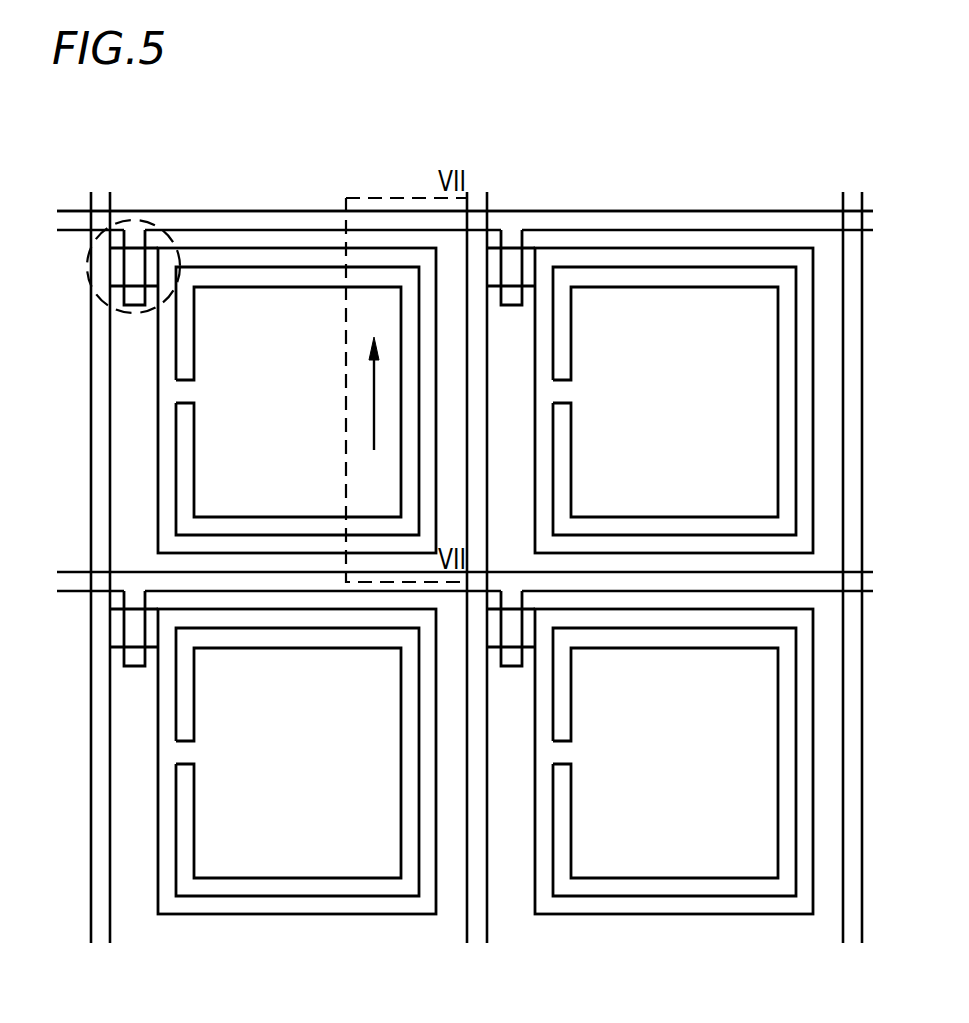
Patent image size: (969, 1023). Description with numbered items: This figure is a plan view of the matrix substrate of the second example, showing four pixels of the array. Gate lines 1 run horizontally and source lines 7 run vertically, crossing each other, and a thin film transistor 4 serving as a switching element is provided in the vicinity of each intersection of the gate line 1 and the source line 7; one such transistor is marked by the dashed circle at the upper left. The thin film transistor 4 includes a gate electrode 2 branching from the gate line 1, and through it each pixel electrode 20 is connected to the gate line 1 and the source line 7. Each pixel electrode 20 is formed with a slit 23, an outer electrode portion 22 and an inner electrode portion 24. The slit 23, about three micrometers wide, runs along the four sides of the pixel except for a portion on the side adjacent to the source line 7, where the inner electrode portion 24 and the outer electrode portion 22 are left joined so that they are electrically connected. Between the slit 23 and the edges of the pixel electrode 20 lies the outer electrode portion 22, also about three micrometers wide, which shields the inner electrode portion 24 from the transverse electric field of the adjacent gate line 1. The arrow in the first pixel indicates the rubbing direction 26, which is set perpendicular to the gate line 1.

The gate line 1 is at (258, 218).
The gate electrode 2 is at (137, 238).
The thin film transistor 4 is at (165, 234).
The source line 7 is at (100, 197).
The pixel electrode 20 is at (443, 117).
The outer electrode portion 22 is at (303, 255).
The slit 23 is at (368, 275).
The inner electrode portion 24 is at (390, 298).
The rubbing direction 26 is at (375, 393).